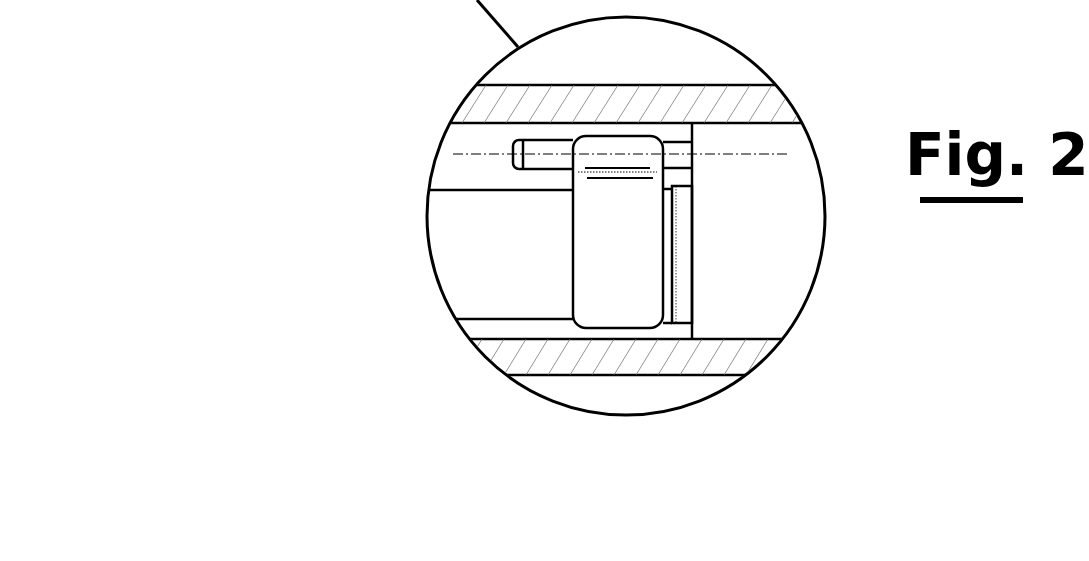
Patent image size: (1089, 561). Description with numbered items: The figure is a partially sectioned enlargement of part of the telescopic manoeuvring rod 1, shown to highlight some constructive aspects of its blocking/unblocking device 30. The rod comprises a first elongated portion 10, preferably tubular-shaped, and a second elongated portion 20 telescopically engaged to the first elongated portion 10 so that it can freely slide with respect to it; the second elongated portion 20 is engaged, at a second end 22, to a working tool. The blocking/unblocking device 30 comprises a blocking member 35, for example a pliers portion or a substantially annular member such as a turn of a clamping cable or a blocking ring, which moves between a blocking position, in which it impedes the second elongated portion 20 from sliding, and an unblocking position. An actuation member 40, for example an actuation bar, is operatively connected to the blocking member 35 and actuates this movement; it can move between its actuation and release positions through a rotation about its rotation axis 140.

The telescopic manoeuvring rod 1 is at (360, 8).
The first elongated portion 10 is at (778, 282).
The second elongated portion 20 is at (448, 244).
The second end 22 is at (631, 372).
The blocking/unblocking device 30 is at (595, 88).
The blocking member 35 is at (708, 0).
The actuation member 40 is at (511, 147).
The rotation axis 140 is at (792, 153).